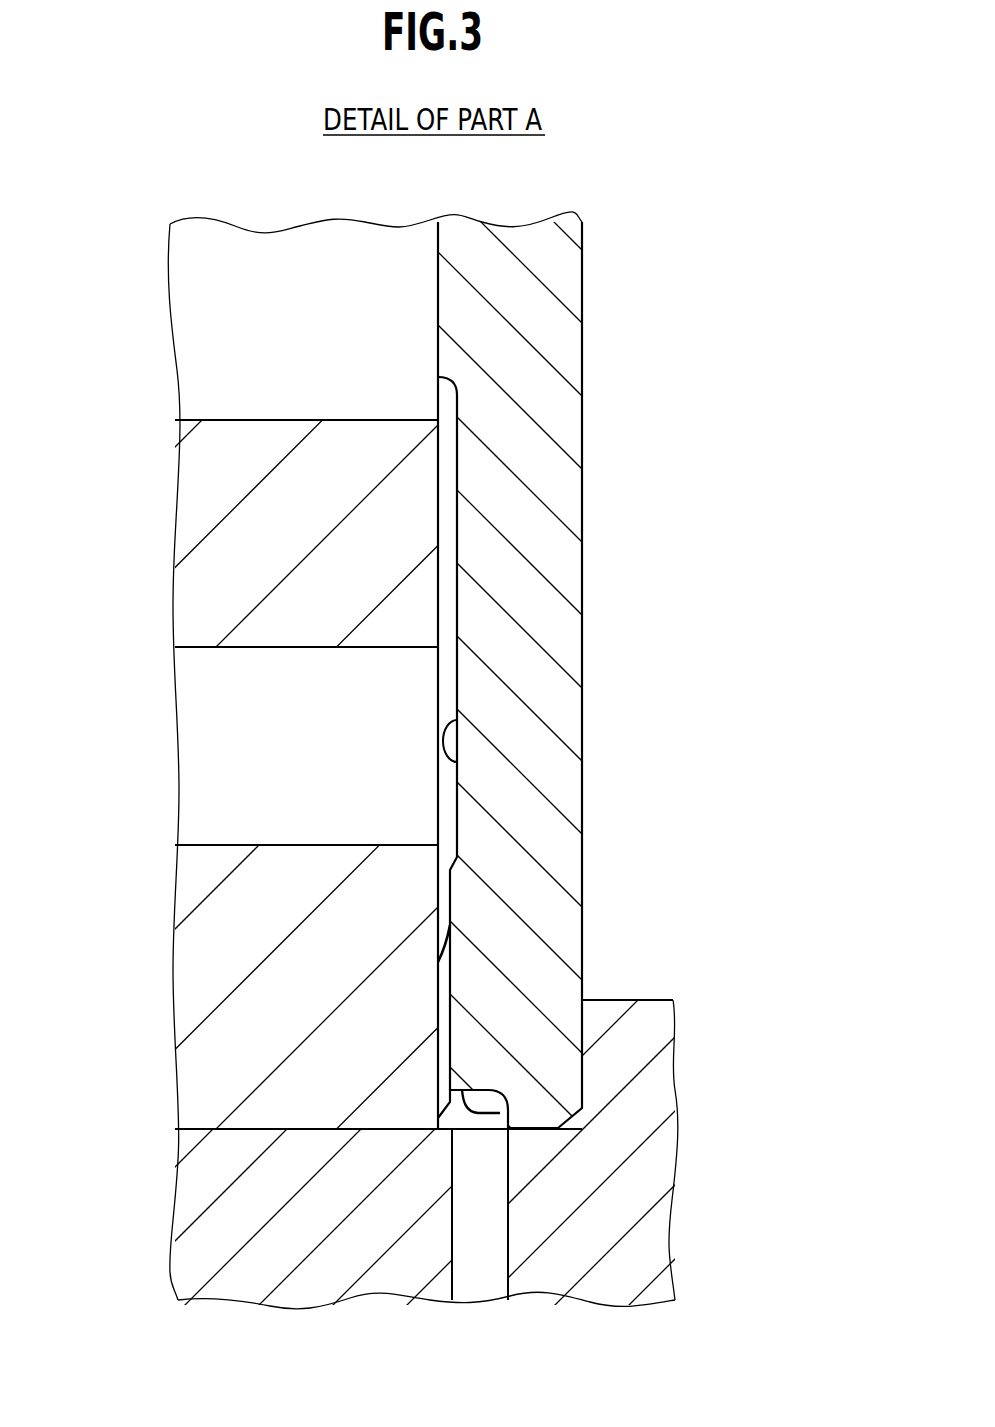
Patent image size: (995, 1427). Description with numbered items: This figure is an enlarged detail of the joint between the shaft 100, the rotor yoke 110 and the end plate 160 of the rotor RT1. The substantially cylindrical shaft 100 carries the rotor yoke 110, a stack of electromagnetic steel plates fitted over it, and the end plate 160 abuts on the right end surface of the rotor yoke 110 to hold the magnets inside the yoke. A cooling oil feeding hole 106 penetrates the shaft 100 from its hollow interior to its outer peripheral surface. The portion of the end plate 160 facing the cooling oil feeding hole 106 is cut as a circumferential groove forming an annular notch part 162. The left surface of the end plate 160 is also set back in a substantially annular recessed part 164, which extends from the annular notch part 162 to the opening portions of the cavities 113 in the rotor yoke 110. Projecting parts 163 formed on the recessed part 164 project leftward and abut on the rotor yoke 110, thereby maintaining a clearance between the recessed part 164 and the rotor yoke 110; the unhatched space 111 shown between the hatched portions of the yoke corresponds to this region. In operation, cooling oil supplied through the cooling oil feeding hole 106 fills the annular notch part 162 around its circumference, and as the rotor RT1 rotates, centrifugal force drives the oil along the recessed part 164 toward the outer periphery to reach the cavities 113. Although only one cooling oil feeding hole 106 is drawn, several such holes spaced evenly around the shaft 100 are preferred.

The shaft 100 is at (205, 1185).
The cooling oil feeding hole 106 is at (455, 1216).
The rotor yoke 110 is at (232, 530).
The recess 111 is at (245, 740).
The cavities 113 is at (205, 357).
The end plate 160 is at (568, 587).
The annular notch part 162 is at (500, 1113).
The projecting parts 163 is at (445, 1015).
The recessed part 164 is at (445, 759).
The rotor RT1 is at (620, 290).